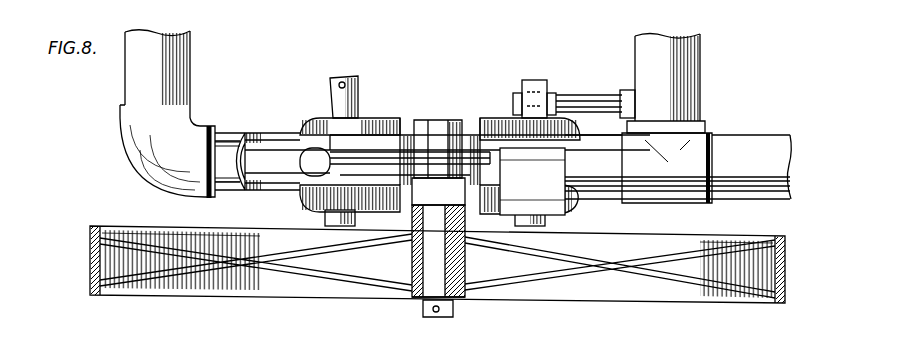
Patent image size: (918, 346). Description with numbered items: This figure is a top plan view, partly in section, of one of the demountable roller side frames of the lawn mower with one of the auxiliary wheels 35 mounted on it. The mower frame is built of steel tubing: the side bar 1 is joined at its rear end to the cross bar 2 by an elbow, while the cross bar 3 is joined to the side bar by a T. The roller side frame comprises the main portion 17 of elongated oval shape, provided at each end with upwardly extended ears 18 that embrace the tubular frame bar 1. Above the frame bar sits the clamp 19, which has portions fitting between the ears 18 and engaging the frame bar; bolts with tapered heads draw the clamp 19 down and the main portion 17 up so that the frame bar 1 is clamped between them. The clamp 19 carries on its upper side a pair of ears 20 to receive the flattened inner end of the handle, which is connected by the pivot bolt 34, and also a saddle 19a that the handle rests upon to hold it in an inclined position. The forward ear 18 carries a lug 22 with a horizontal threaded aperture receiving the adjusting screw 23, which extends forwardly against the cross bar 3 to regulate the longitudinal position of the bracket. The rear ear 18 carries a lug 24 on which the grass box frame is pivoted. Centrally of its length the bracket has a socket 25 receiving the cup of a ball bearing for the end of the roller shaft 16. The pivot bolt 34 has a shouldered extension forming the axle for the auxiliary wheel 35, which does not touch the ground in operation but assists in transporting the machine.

The side bar 1 is at (760, 135).
The cross bar 2 is at (190, 50).
The cross bar 3 is at (702, 56).
The shaft 16 is at (328, 118).
The main portion of roller side frame 17 is at (305, 128).
The ear 18 is at (570, 210).
The clamp 19 is at (372, 155).
The saddle 19a is at (262, 133).
The ear 20 is at (410, 155).
The lug 22 is at (540, 78).
The adjusting screw 23 is at (592, 93).
The lug 24 is at (346, 76).
The socket 25 is at (522, 92).
The pivot bolt 34 is at (440, 125).
The auxiliary wheel 35 is at (299, 285).